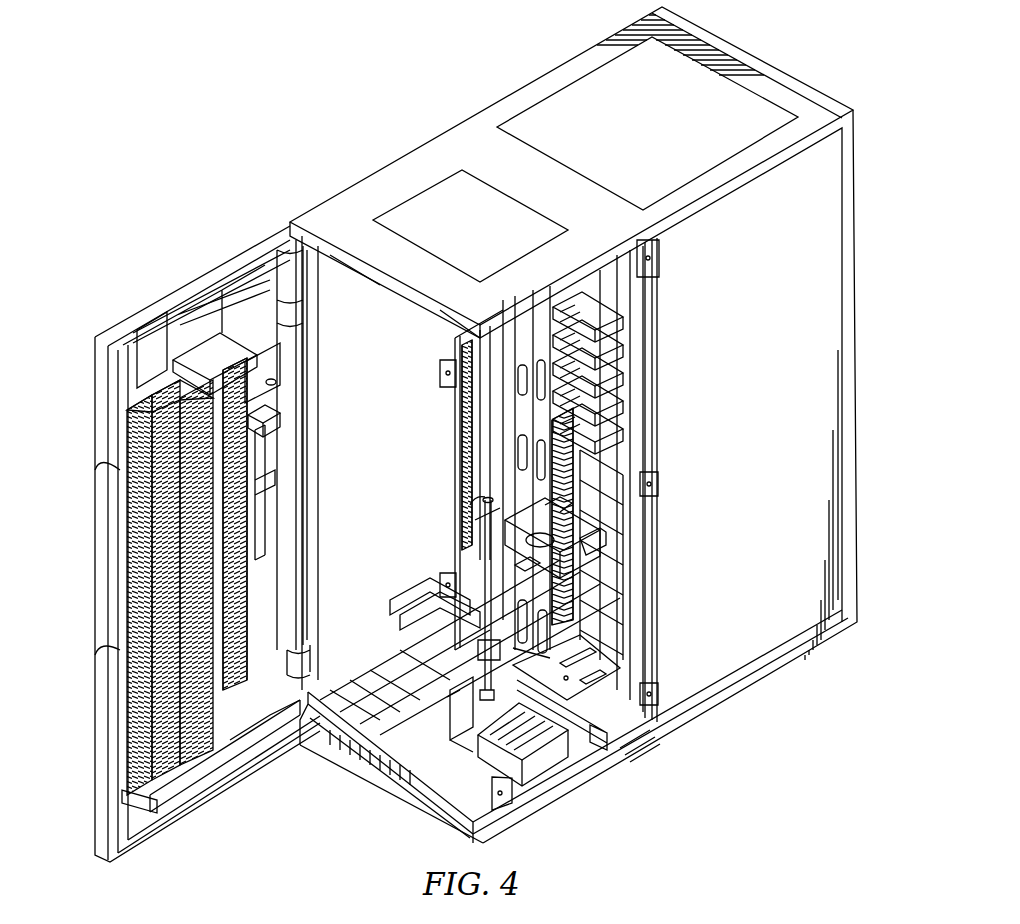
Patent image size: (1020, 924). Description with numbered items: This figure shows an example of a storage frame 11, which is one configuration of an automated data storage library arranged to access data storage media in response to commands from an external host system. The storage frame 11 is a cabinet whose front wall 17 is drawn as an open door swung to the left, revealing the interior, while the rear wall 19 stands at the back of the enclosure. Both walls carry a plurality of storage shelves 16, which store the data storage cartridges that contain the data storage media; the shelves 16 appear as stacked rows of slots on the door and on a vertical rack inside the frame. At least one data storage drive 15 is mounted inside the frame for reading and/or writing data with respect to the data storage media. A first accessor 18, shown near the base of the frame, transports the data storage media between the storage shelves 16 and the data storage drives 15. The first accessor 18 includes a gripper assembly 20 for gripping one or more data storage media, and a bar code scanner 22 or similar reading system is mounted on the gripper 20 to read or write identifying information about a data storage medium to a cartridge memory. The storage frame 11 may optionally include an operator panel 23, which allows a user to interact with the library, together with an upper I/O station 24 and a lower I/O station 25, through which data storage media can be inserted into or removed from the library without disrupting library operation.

The storage frame 11 is at (328, 78).
The data storage drive 15 is at (600, 290).
The storage shelves 16 is at (125, 655).
The front wall 17 is at (95, 470).
The first accessor 18 is at (568, 740).
The rear wall 19 is at (452, 343).
The gripper assembly 20 is at (600, 540).
The bar code scanner 22 is at (490, 558).
The operator panel 23 is at (270, 330).
The upper I/O station 24 is at (263, 375).
The lower I/O station 25 is at (270, 545).